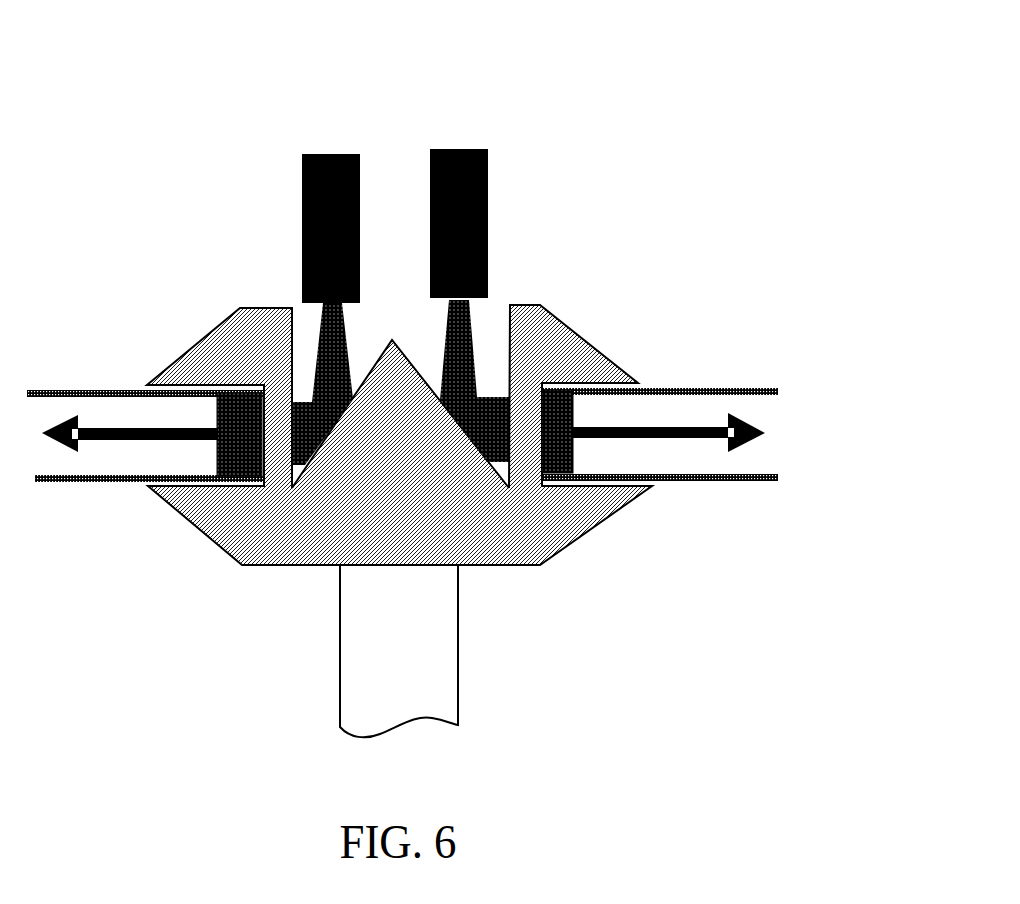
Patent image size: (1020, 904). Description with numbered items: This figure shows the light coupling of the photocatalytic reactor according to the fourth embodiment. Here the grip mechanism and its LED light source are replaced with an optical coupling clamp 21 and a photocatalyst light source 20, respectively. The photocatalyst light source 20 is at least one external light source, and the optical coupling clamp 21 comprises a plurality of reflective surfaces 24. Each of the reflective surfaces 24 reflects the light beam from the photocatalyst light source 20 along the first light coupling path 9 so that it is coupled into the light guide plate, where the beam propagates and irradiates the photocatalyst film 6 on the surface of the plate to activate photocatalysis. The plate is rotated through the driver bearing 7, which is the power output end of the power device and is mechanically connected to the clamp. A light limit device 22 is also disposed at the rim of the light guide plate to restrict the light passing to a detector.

The photocatalyst film 6 is at (772, 387).
The driver bearing 7 is at (322, 644).
The first light coupling path 9 is at (650, 427).
The photocatalyst light source 20 is at (488, 230).
The optical coupling clamp 21 is at (177, 363).
The light limit device 22 is at (478, 330).
The reflective surfaces 24 is at (375, 368).